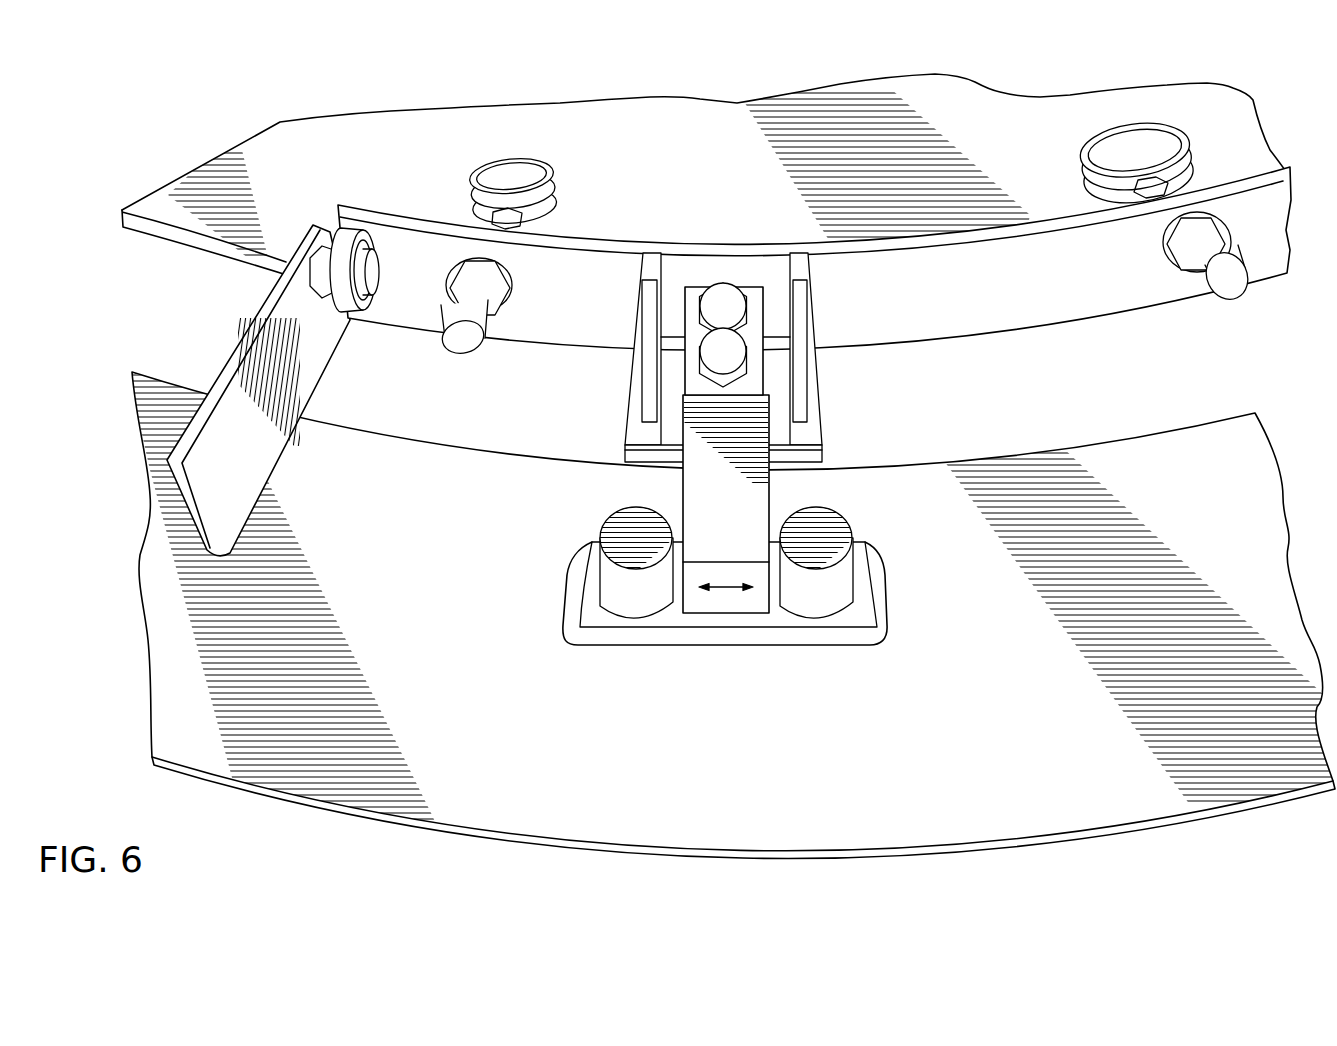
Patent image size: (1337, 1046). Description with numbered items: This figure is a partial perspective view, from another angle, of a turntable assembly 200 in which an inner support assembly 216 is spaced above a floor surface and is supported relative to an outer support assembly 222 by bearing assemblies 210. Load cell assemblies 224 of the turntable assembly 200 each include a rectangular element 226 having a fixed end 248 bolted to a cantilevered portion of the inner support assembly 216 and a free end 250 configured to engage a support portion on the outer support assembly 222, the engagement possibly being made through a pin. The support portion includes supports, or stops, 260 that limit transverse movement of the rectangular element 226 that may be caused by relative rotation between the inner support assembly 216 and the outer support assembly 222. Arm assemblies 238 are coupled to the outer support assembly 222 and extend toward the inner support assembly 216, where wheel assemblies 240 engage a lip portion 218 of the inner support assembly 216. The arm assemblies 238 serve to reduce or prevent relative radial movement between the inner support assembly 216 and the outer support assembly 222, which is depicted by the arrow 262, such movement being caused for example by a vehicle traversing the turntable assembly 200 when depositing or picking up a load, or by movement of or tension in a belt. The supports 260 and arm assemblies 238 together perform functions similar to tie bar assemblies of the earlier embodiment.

The turntable assembly 200 is at (141, 127).
The inner support assembly 216 is at (372, 117).
The bearing assemblies 210 is at (467, 192).
The lip portion 218 is at (603, 233).
The wheel assemblies 240 is at (333, 226).
The arm assemblies 238 is at (333, 367).
The outer support assembly 222 is at (1083, 440).
The load cell assemblies 224 is at (768, 432).
The rectangular element 226 is at (677, 485).
The fixed end 248 is at (693, 287).
The free end 250 is at (735, 597).
The supports 260 is at (610, 520).
The arrow 262 is at (723, 585).